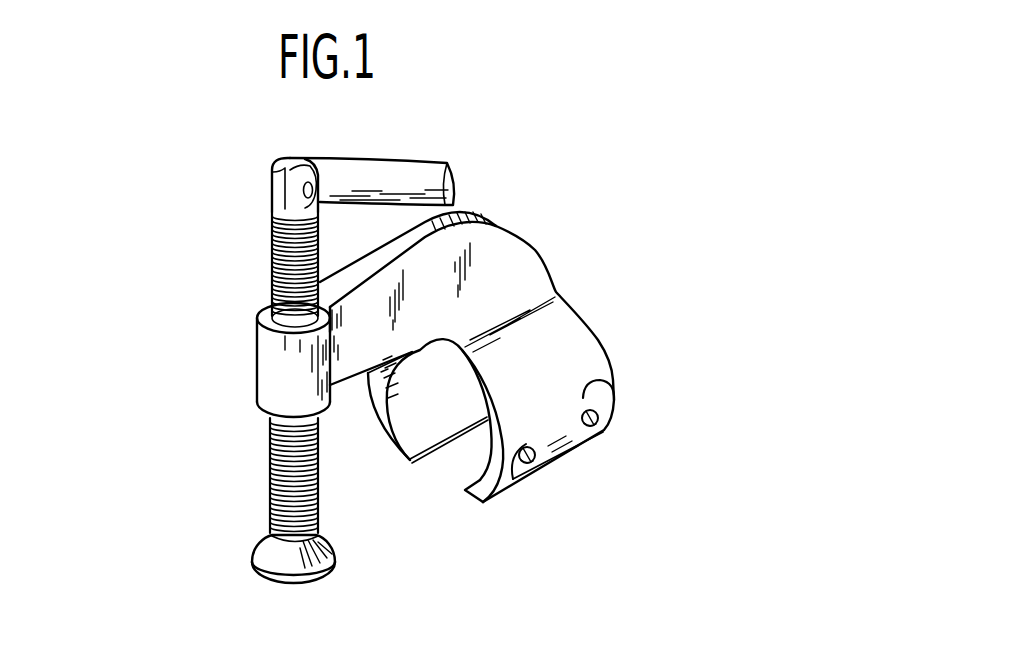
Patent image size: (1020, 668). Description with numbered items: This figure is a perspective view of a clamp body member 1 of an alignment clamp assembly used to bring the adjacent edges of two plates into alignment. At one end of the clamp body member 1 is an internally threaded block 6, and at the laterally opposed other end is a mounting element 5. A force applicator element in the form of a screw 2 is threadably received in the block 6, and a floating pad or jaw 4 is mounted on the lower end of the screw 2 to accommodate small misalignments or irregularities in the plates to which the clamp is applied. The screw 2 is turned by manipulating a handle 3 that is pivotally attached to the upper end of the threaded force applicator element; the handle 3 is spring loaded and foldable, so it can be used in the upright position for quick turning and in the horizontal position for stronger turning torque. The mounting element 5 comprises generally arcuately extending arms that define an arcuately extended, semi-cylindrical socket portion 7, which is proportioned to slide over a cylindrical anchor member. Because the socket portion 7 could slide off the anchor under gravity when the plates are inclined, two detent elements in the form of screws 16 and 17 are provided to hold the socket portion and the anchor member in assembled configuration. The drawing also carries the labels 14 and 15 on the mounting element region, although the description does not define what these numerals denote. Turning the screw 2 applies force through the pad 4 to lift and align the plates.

The clamp body member 1 is at (519, 353).
The screw 2 is at (272, 243).
The handle 3 is at (418, 162).
The floating pad or jaw 4 is at (254, 545).
The mounting element 5 is at (467, 357).
The internally threaded block 6 is at (259, 353).
The socket portion 7 is at (452, 463).
The mounting surface 14 is at (588, 396).
The base plate 15 is at (514, 478).
The screw 16 is at (598, 418).
The screw 17 is at (540, 453).